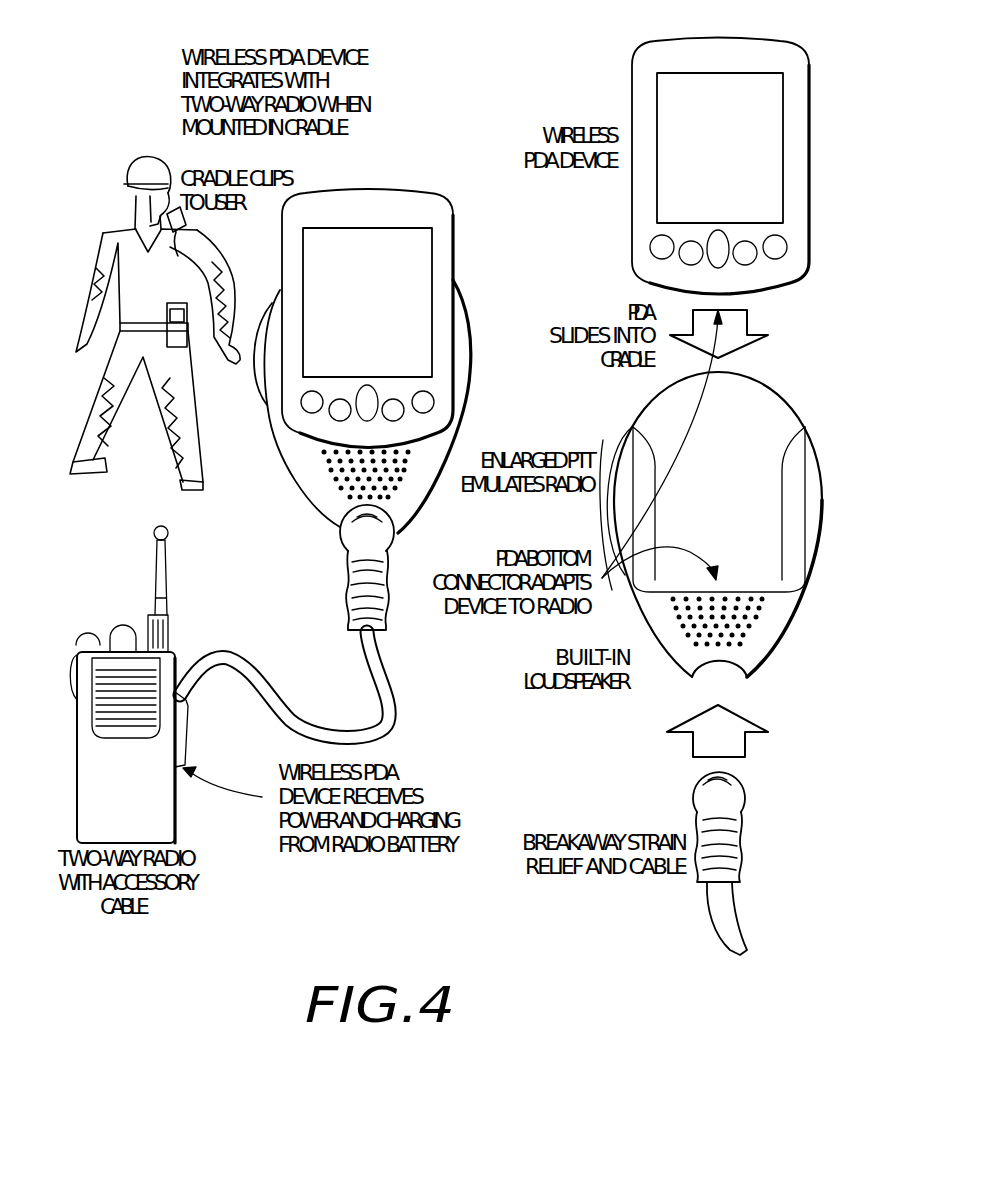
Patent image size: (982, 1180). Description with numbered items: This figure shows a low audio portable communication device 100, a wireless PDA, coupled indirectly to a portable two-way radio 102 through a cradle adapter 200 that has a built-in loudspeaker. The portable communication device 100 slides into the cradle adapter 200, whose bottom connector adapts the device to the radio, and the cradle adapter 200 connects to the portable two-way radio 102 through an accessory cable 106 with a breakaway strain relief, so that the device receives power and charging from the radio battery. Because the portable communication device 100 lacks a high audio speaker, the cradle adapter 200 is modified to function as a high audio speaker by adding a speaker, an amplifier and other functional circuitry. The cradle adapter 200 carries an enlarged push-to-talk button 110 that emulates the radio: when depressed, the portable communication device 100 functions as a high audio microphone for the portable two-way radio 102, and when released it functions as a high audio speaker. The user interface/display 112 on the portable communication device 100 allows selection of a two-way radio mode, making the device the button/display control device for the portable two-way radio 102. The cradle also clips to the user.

The portable communication device 100 is at (454, 222).
The portable two-way radio 102 is at (173, 812).
The accessory cable with breakaway strain relief 106 is at (356, 648).
The push-to-talk button 110 is at (603, 508).
The user interface/display 112 is at (415, 270).
The cradle adapter 200 is at (470, 405).